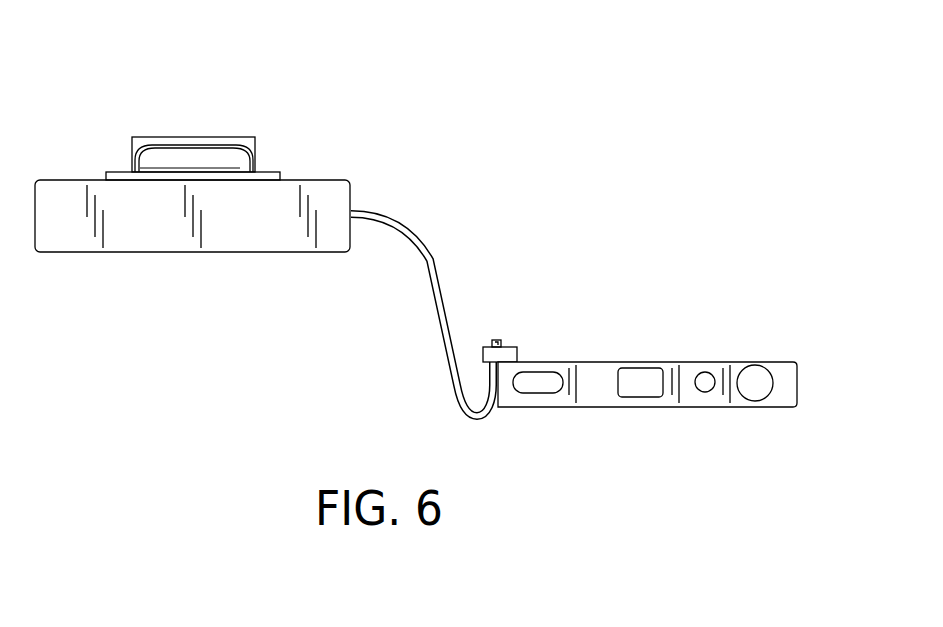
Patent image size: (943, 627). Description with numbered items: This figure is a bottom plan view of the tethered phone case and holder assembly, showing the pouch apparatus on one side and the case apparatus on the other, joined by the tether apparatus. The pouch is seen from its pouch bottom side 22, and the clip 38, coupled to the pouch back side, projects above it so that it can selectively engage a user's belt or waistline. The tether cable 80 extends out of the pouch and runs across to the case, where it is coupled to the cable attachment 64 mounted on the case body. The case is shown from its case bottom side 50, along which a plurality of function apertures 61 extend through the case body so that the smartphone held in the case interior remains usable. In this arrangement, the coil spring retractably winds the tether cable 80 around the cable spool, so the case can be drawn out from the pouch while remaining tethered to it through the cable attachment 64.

The pouch bottom side 22 is at (237, 230).
The clip 38 is at (192, 157).
The tether cable 80 is at (426, 263).
The cable attachment 64 is at (503, 356).
The case bottom side 50 is at (590, 378).
The function apertures 61 is at (757, 392).